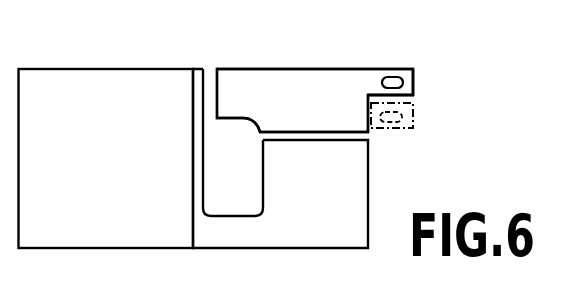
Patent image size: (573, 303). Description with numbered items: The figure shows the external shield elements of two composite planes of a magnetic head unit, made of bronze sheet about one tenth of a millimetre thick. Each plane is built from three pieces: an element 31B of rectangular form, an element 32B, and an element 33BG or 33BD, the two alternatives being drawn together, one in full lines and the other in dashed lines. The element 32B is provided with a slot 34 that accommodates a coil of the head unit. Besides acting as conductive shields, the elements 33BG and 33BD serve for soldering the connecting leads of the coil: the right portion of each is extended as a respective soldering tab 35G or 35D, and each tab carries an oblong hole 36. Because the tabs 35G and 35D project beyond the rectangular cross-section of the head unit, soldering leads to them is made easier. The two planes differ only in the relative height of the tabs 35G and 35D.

The element of rectangular form 31B is at (123, 249).
The element 32B is at (313, 249).
The element 33BG is at (240, 69).
The element 33BD is at (315, 87).
The slot 34 is at (262, 177).
The soldering tab 35G is at (413, 77).
The soldering tab 35D is at (414, 128).
The oblong hole 36 is at (403, 82).